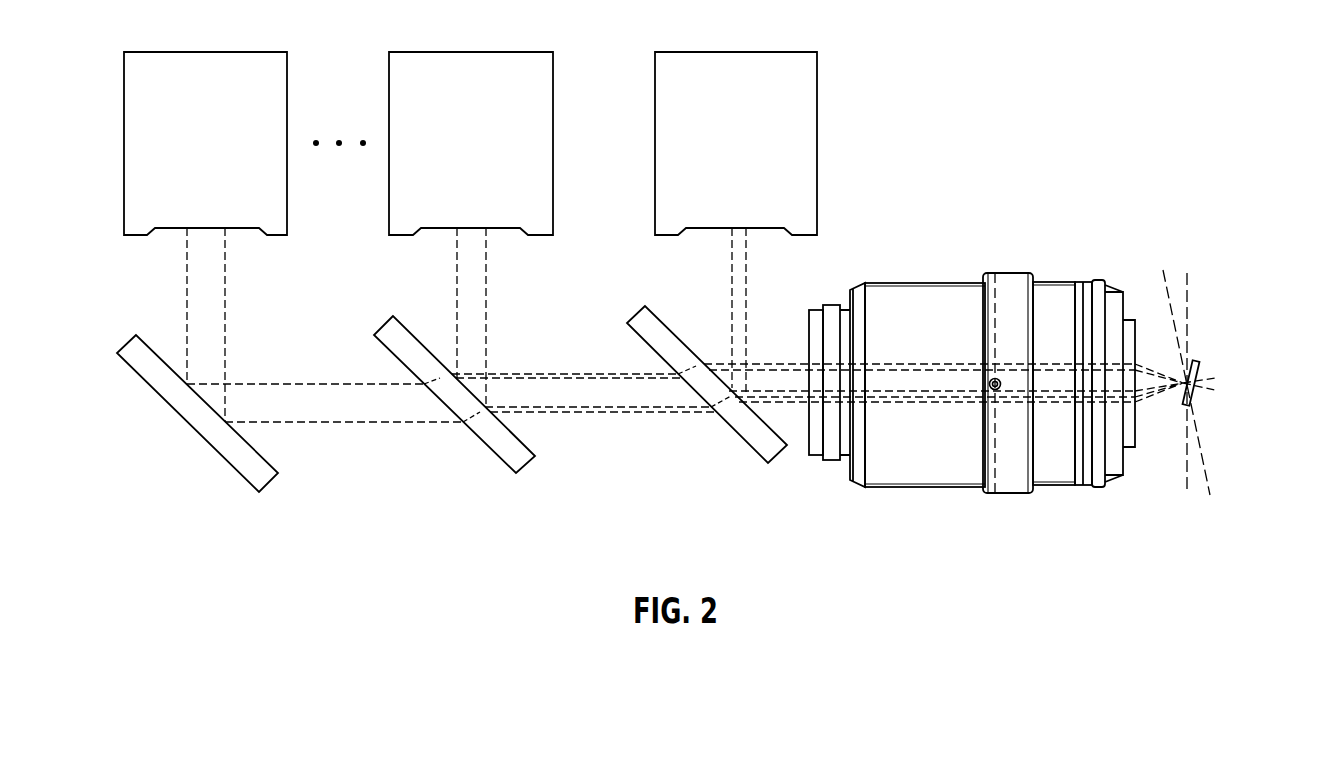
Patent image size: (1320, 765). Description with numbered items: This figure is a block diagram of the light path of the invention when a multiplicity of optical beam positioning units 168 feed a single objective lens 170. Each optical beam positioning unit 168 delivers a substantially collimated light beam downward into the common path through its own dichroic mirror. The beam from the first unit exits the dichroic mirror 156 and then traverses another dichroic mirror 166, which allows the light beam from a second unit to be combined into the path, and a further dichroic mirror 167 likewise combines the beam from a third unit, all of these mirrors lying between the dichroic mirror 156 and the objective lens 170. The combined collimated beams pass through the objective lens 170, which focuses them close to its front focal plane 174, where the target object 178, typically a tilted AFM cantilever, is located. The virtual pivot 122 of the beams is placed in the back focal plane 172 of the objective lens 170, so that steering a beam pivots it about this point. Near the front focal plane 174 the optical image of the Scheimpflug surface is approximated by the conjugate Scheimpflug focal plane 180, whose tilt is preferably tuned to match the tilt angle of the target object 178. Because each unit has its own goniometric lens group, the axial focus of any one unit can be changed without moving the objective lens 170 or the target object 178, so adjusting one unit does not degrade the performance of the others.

The optical beam processing unit (OBPU) 168 is at (252, 51).
The dichroic mirror 156 is at (222, 460).
The dichroic mirror 166 is at (485, 447).
The beam combiner / dichroic mirror 167 is at (743, 443).
The objective lens 170 is at (918, 282).
The back focal plane 172 is at (995, 305).
The virtual pivot 122 is at (989, 390).
The front focal plane 174 is at (1188, 292).
The target object 178 is at (1193, 380).
The conjugate Scheimpflug focal plane 180 is at (1168, 288).